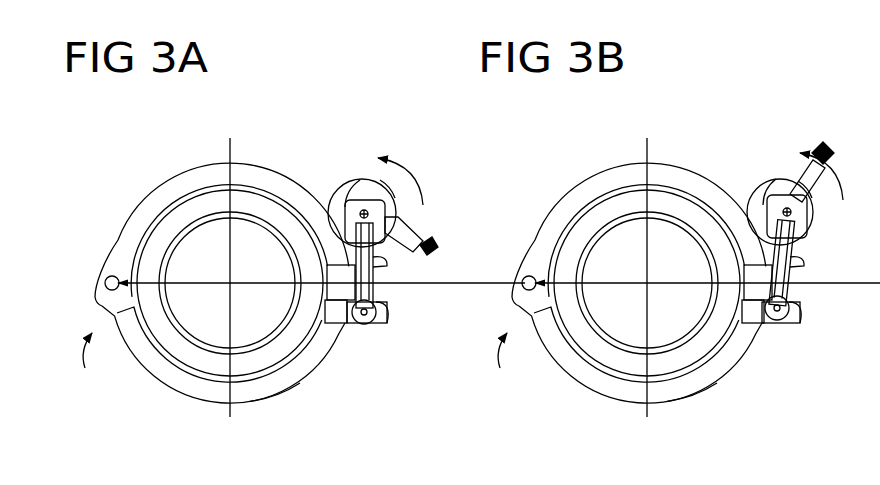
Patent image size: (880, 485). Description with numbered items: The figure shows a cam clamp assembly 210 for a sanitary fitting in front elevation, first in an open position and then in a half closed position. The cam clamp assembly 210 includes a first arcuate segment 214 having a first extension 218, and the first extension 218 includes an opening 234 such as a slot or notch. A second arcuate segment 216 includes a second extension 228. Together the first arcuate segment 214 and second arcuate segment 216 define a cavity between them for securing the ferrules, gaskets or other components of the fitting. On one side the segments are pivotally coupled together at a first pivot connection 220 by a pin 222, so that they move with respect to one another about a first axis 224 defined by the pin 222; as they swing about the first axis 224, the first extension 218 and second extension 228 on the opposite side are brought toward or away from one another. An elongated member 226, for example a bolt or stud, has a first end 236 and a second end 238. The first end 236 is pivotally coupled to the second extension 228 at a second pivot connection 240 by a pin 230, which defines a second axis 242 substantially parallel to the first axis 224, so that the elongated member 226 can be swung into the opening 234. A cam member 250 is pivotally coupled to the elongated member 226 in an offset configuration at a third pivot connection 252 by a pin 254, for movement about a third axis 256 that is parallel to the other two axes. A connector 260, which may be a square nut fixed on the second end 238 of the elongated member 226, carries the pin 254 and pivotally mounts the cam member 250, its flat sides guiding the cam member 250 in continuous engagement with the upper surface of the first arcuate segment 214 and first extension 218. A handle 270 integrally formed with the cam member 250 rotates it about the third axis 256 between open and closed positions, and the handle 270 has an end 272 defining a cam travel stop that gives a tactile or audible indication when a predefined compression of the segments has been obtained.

In FIG. 3A, the cam clamp assembly 210 is at (256, 133).
In FIG. 3B, the cam clamp assembly 210 is at (678, 132).
In FIG. 3A, the first arcuate segment 214 is at (119, 238).
In FIG. 3B, the first arcuate segment 214 is at (536, 236).
In FIG. 3A, the second arcuate segment 216 is at (163, 378).
In FIG. 3B, the second arcuate segment 216 is at (580, 378).
In FIG. 3A, the first extension 218 is at (418, 278).
In FIG. 3B, the first extension 218 is at (830, 278).
In FIG. 3A, the first pivot connection 220 is at (92, 361).
In FIG. 3B, the first pivot connection 220 is at (507, 361).
In FIG. 3A, the pin 222 is at (108, 274).
In FIG. 3B, the pin 222 is at (524, 274).
In FIG. 3A, the first axis 224 is at (160, 290).
In FIG. 3B, the first axis 224 is at (577, 290).
In FIG. 3A, the elongated member 226 is at (375, 293).
In FIG. 3B, the elongated member 226 is at (792, 292).
In FIG. 3A, the second extension 228 is at (386, 325).
In FIG. 3B, the second extension 228 is at (800, 325).
In FIG. 3A, the pin 230 is at (366, 324).
In FIG. 3B, the pin 230 is at (780, 321).
In FIG. 3A, the opening 234 is at (382, 261).
In FIG. 3B, the opening 234 is at (799, 260).
In FIG. 3A, the first end 236 is at (386, 305).
In FIG. 3B, the first end 236 is at (800, 305).
In FIG. 3A, the second end 238 is at (327, 268).
In FIG. 3B, the second end 238 is at (744, 268).
In FIG. 3A, the second pivot connection 240 is at (339, 375).
In FIG. 3B, the second pivot connection 240 is at (754, 375).
In FIG. 3A, the second axis 242 is at (330, 310).
In FIG. 3B, the second axis 242 is at (747, 310).
In FIG. 3A, the cam member 250 is at (371, 206).
In FIG. 3B, the cam member 250 is at (780, 204).
In FIG. 3A, the third pivot connection 252 is at (398, 181).
In FIG. 3B, the third pivot connection 252 is at (811, 190).
In FIG. 3A, the pin 254 is at (369, 213).
In FIG. 3B, the pin 254 is at (792, 211).
In FIG. 3A, the third axis 256 is at (366, 200).
In FIG. 3B, the third axis 256 is at (772, 192).
In FIG. 3A, the connector 260 is at (348, 203).
In FIG. 3B, the connector 260 is at (769, 197).
In FIG. 3A, the handle 270 is at (416, 228).
In FIG. 3B, the handle 270 is at (812, 150).
In FIG. 3A, the end 272 is at (437, 244).
In FIG. 3B, the end 272 is at (833, 150).